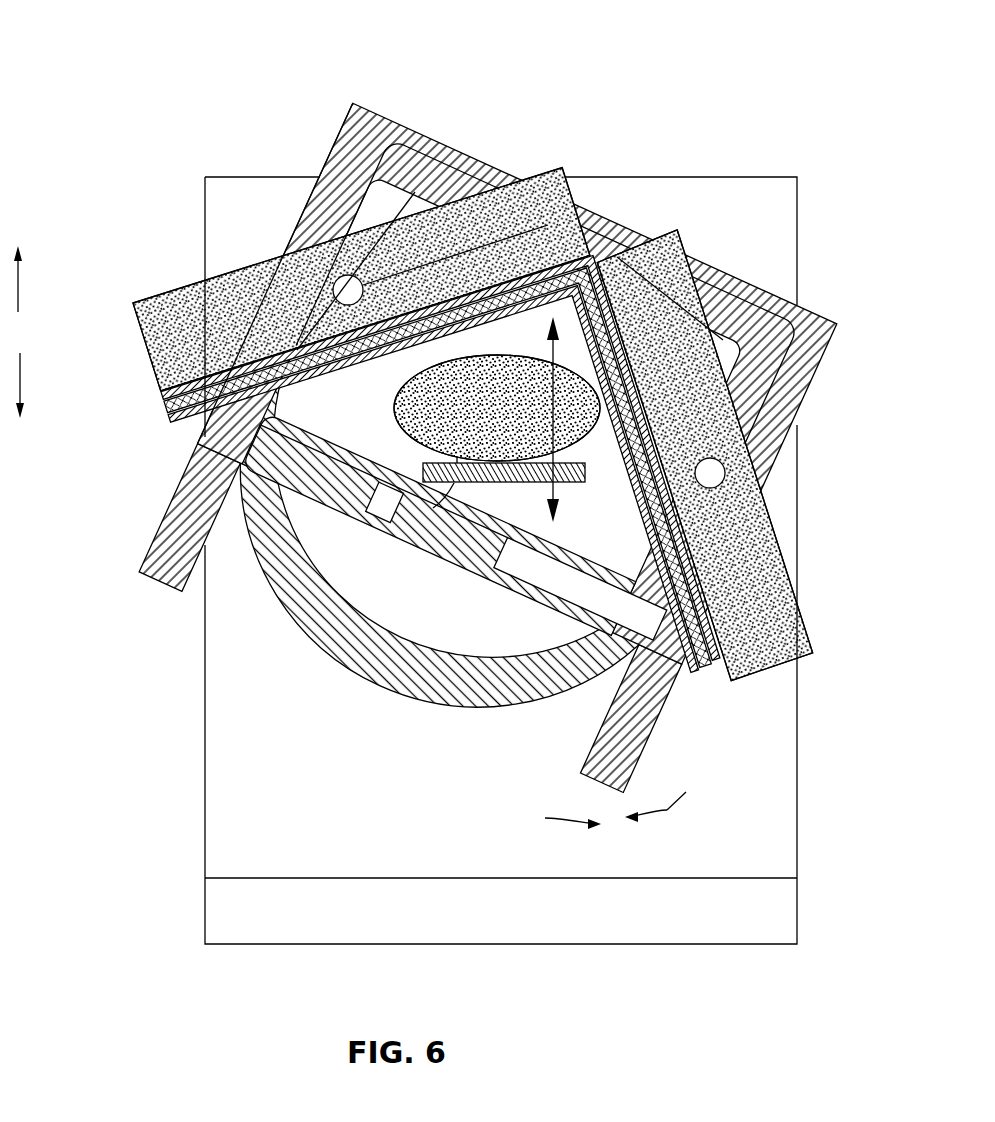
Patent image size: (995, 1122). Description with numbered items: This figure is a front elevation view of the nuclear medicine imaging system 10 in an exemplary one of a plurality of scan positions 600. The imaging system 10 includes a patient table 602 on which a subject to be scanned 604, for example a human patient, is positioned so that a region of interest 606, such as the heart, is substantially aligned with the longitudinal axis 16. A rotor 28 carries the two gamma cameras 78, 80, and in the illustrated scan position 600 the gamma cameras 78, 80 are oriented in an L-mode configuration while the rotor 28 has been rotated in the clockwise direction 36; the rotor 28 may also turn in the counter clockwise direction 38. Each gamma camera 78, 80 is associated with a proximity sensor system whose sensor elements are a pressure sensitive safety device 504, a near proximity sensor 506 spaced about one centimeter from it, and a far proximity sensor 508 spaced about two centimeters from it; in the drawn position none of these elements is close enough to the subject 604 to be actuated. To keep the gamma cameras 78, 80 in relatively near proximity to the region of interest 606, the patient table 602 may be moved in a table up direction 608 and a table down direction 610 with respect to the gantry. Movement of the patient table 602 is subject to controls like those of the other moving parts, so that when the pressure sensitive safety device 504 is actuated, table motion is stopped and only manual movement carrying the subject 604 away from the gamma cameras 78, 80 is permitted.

The nuclear medicine imaging system 10 is at (443, 475).
The longitudinal axis 16 is at (495, 408).
The rotor 28 is at (432, 704).
The clockwise direction 36 is at (667, 810).
The counter clockwise direction 38 is at (545, 818).
The gamma camera 78 is at (537, 190).
The gamma camera 80 is at (790, 623).
The pressure sensitive safety device 504 is at (162, 396).
The near proximity sensor 506 is at (166, 409).
The far proximity sensor 508 is at (172, 420).
The scan position 600 is at (667, 195).
The patient table 602 is at (507, 481).
The subject to be scanned 604 is at (402, 487).
The region of interest 606 is at (573, 457).
The table up direction 608 is at (20, 292).
The table down direction 610 is at (20, 362).